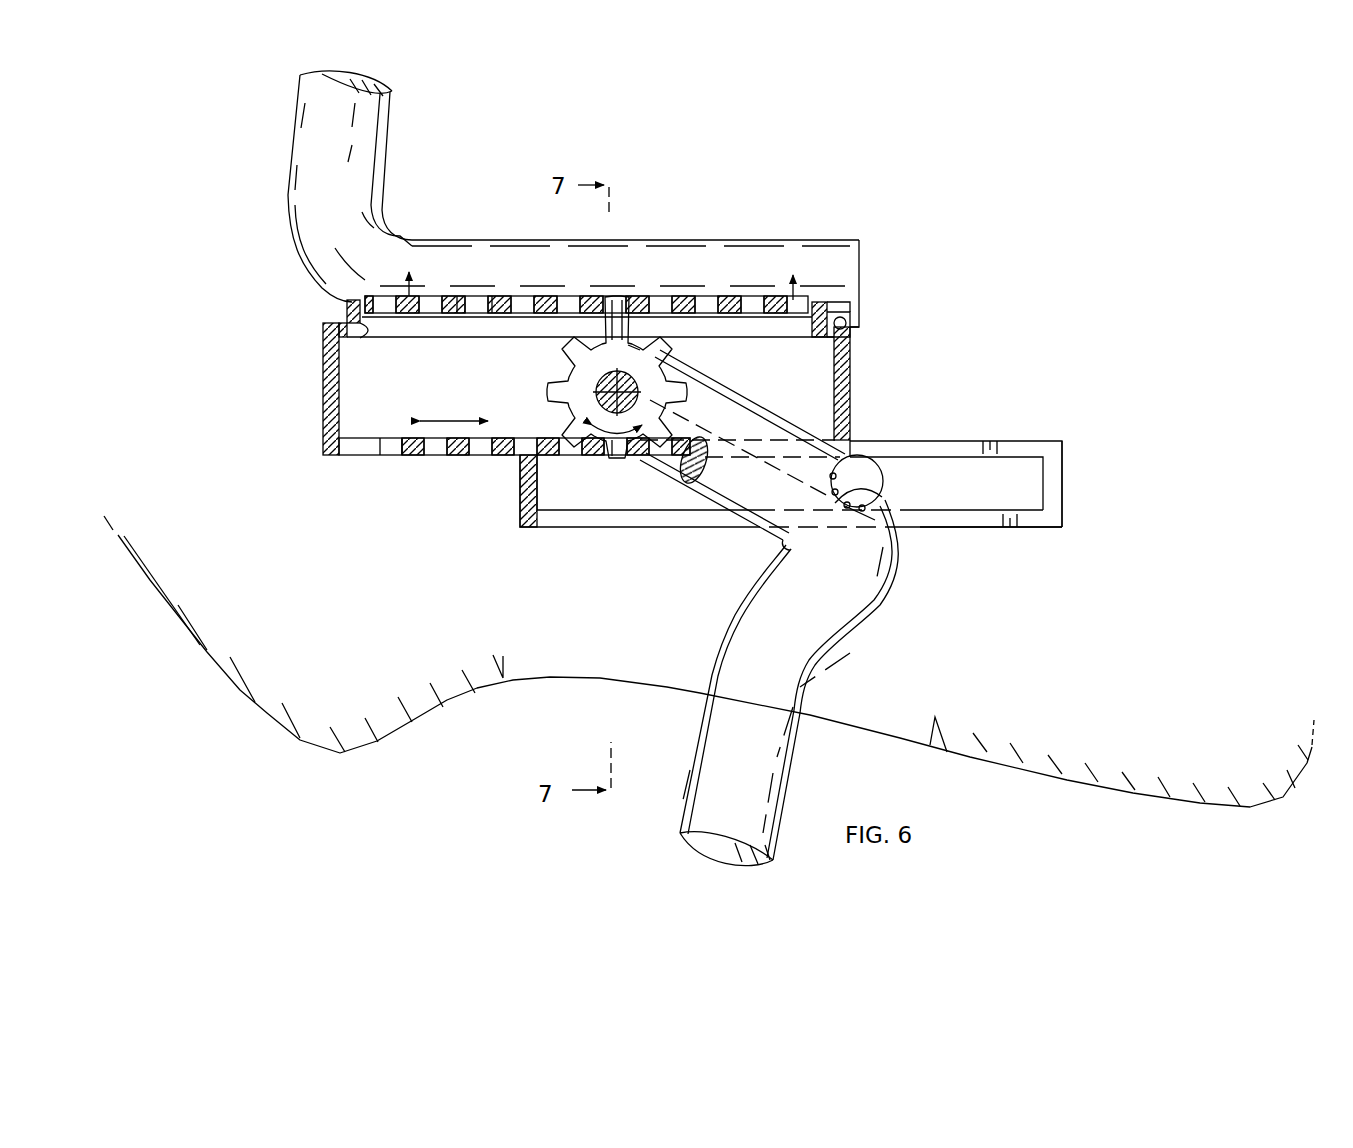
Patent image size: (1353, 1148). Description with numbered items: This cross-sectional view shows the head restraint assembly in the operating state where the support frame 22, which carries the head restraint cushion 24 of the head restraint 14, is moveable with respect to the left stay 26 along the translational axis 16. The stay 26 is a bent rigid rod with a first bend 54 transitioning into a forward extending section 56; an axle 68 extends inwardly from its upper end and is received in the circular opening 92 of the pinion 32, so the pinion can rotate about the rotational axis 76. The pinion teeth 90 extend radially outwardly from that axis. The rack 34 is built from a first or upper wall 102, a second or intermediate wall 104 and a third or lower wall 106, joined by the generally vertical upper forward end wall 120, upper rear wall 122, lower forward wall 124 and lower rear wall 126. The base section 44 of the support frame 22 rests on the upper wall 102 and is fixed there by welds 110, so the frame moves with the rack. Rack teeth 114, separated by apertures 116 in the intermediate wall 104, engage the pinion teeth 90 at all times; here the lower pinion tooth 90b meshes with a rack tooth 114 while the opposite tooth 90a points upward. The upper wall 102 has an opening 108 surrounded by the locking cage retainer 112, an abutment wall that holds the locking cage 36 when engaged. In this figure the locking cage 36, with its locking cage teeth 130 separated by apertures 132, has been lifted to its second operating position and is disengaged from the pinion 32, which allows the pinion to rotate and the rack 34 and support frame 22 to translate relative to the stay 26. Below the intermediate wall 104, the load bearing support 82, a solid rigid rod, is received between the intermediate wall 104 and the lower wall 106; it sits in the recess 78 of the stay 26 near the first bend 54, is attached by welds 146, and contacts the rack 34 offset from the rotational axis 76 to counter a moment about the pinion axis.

The head restraint 14 is at (264, 718).
The translational axis 16 is at (455, 418).
The support frame 22 is at (290, 162).
The head restraint cushion 24 is at (1060, 776).
The left stay 26 is at (824, 683).
The pinion 32 is at (613, 381).
The rack 34 is at (688, 410).
The locking cage 36 is at (733, 292).
The base section 44 is at (648, 246).
The first bend 54 is at (906, 575).
The forward extending section 56 is at (728, 492).
The axle 68 is at (600, 346).
The rotational axis 76 is at (596, 400).
The recess 78 is at (885, 500).
The load bearing support 82 is at (886, 481).
The pinion teeth 90 is at (688, 391).
The pinion tooth 90a is at (617, 322).
The pinion tooth 90b is at (612, 462).
The opening 92 is at (686, 402).
The first wall 102 is at (851, 332).
The second wall 104 is at (965, 442).
The third wall 106 is at (984, 527).
The opening 108 is at (352, 342).
The welds 110 is at (846, 318).
The locking cage retainer 112 is at (824, 302).
The rack teeth 114 is at (416, 457).
The apertures 116 is at (383, 457).
The upper forward end wall 120 is at (324, 404).
The upper rear wall 122 is at (852, 390).
The lower forward wall 124 is at (520, 488).
The lower rear wall 126 is at (1064, 489).
The locking cage teeth 130 is at (458, 296).
The apertures 132 is at (492, 298).
The welds 146 is at (840, 452).